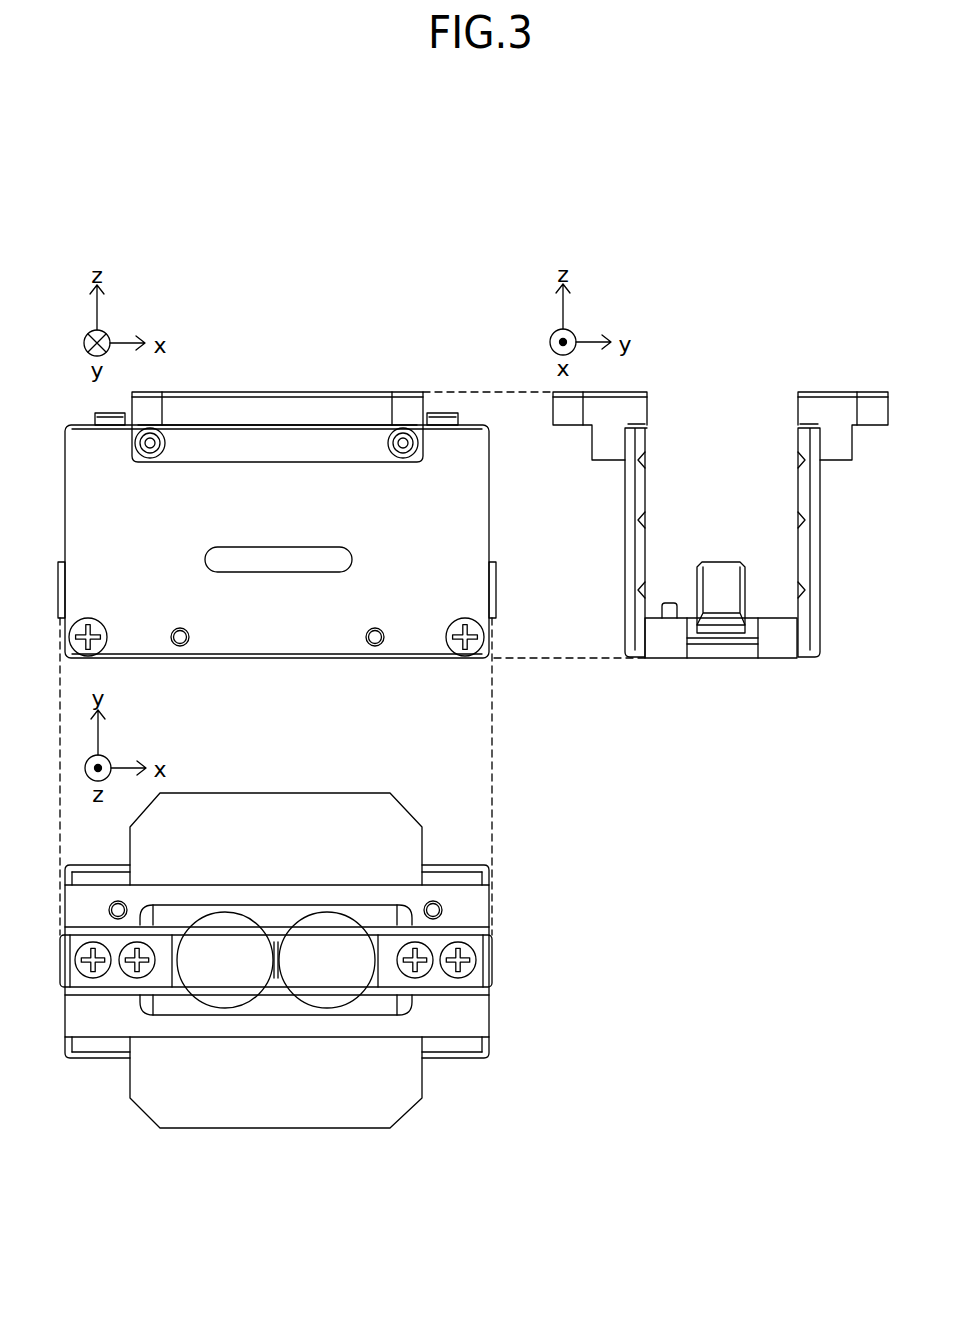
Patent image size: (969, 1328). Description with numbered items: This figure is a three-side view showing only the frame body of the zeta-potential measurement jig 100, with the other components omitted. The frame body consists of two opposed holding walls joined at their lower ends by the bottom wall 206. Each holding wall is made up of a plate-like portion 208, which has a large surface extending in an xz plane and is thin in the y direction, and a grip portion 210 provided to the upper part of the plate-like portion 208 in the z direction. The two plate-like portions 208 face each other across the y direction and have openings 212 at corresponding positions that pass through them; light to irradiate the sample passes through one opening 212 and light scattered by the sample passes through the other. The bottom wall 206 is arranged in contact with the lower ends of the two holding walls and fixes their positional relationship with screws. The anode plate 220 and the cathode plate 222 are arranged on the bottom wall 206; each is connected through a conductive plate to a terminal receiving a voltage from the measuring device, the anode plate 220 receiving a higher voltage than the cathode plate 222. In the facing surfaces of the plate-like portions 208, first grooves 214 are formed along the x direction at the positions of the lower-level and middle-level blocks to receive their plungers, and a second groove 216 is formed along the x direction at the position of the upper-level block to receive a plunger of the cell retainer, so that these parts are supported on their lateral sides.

The zeta-potential measurement jig 100 is at (483, 1220).
The bottom wall 206 is at (770, 640).
The plate-like portion 208 is at (635, 640).
The grip portion 210 is at (317, 412).
The opening 212 is at (277, 558).
The first groove 214 is at (776, 582).
The second groove 216 is at (774, 470).
The anode plate 220 is at (230, 995).
The cathode plate 222 is at (333, 995).